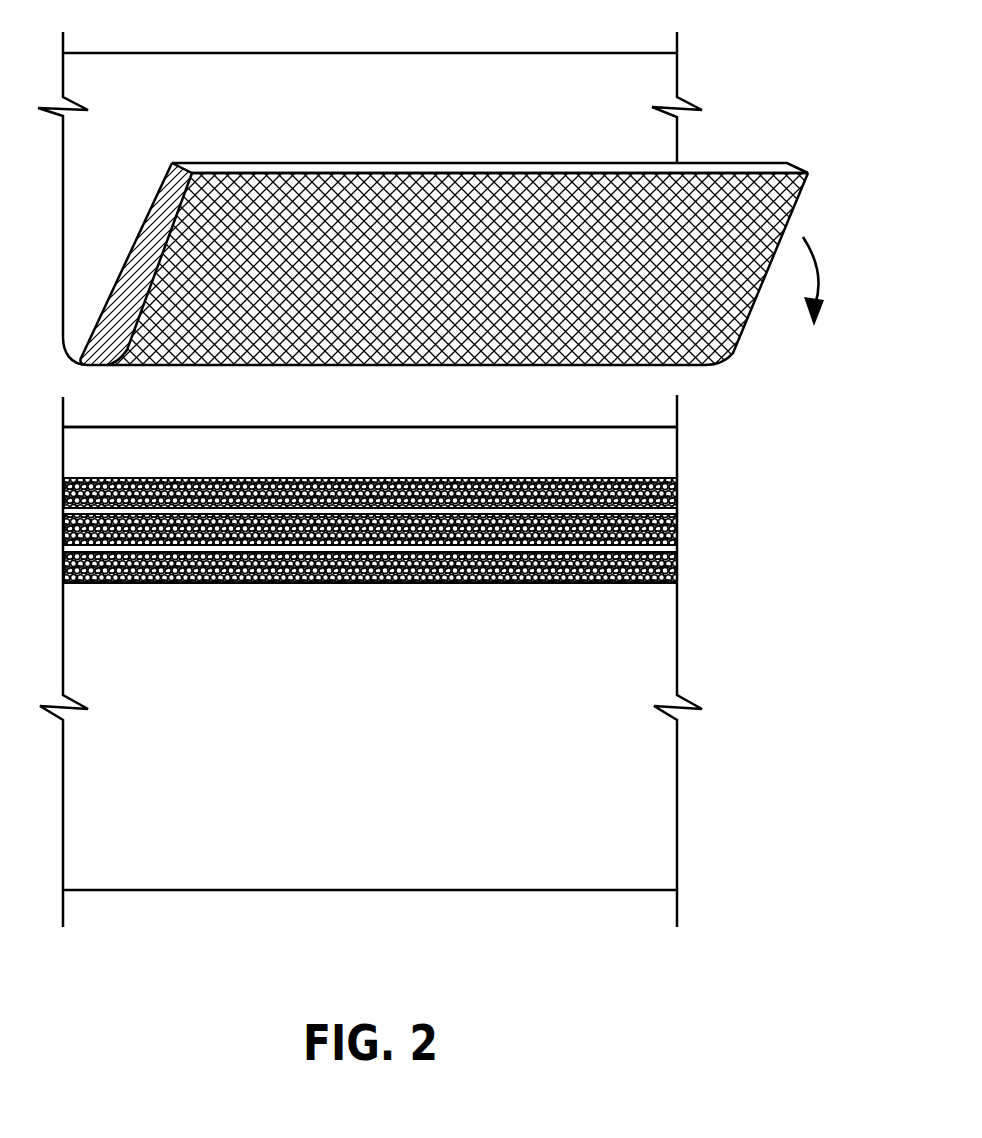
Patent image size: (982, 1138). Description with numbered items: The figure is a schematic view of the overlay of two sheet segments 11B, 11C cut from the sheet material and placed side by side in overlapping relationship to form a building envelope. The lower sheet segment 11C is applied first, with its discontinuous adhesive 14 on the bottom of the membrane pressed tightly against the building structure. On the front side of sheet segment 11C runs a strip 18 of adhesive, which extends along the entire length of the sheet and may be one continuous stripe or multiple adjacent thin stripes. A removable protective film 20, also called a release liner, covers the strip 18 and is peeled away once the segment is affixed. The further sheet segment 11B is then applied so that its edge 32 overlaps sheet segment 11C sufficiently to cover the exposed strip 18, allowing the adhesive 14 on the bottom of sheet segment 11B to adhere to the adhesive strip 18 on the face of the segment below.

The sheet segment 11B is at (360, 70).
The sheet segment 11C is at (368, 870).
The discontinuous adhesive 14 is at (733, 208).
The edge 32 is at (158, 221).
The removable protective film 20 is at (151, 440).
The strip 18 is at (53, 475).